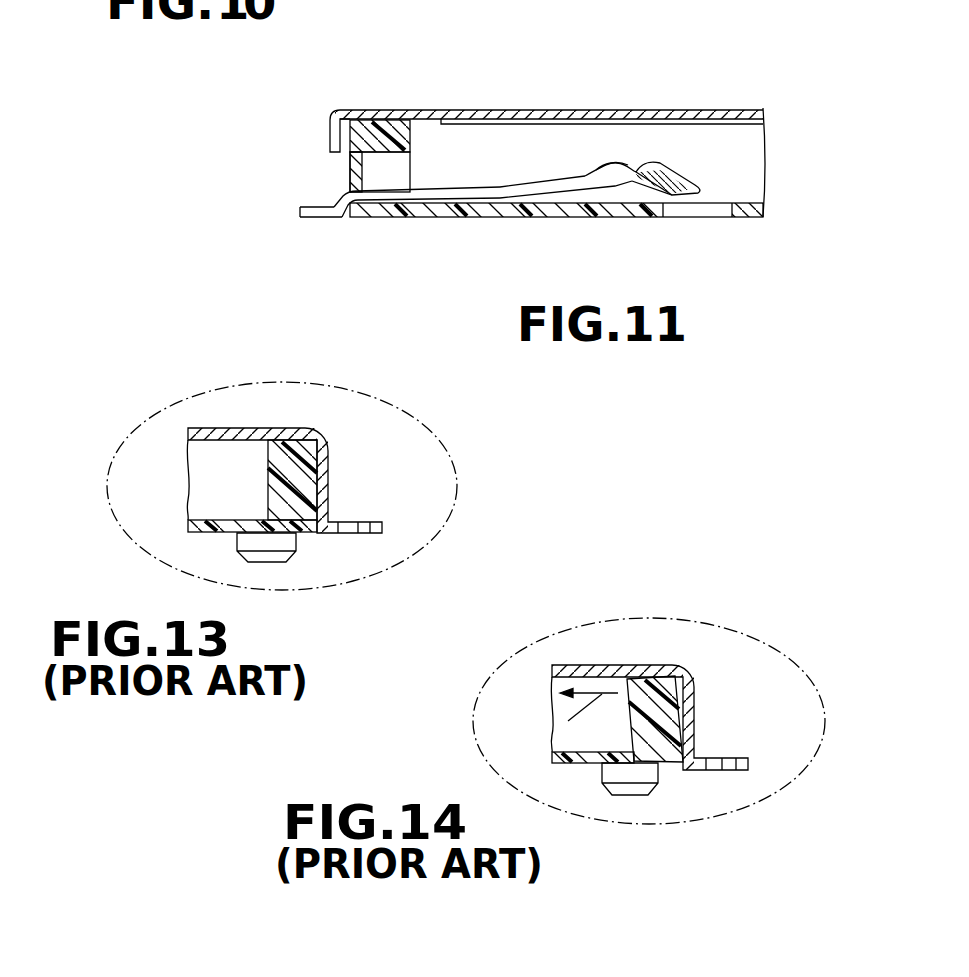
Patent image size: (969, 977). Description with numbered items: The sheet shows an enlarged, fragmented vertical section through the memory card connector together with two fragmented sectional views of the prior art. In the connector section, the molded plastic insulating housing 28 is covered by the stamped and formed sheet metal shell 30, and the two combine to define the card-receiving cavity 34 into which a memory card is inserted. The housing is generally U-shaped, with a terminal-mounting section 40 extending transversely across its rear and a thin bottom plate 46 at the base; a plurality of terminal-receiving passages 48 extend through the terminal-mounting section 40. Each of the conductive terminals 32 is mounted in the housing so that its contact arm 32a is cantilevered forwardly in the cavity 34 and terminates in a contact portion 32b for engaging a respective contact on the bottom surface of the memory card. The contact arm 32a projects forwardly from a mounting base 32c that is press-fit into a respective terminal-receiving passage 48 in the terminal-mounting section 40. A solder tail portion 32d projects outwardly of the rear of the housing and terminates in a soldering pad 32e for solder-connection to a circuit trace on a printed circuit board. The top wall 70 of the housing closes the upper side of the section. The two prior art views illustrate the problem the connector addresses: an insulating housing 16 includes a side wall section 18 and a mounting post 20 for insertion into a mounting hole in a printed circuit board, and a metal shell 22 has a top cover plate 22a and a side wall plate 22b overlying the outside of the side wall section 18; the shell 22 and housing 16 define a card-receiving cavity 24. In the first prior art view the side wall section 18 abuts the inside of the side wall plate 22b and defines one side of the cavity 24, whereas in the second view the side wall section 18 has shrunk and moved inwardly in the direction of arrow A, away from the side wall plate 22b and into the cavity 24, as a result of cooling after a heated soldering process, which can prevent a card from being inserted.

In FIG. 11, the sheet metal shell 30 is at (503, 98).
In FIG. 11, the top wall 70 is at (523, 110).
In FIG. 11, the cavity 34 is at (727, 168).
In FIG. 11, the terminal-mounting section 40 is at (373, 137).
In FIG. 11, the terminal-receiving passages 48 is at (377, 182).
In FIG. 11, the insulating housing 28 is at (493, 230).
In FIG. 11, the bottom plate 46 is at (622, 208).
In FIG. 11, the conductive terminals 32 is at (479, 159).
In FIG. 11, the contact arm 32a is at (565, 189).
In FIG. 11, the contact portion 32b is at (655, 161).
In FIG. 11, the mounting base 32c is at (387, 199).
In FIG. 11, the solder tail portion 32d is at (339, 210).
In FIG. 11, the soldering pad 32e is at (317, 218).
In FIG. 13, the metal shell 22 is at (289, 435).
In FIG. 14, the metal shell 22 is at (665, 653).
In FIG. 13, the top cover plate 22a is at (227, 430).
In FIG. 14, the top cover plate 22a is at (583, 665).
In FIG. 13, the side wall plate 22b is at (322, 478).
In FIG. 14, the side wall plate 22b is at (689, 712).
In FIG. 13, the side wall section 18 is at (293, 467).
In FIG. 14, the side wall section 18 is at (642, 695).
In FIG. 13, the insulating housing 16 is at (175, 532).
In FIG. 14, the insulating housing 16 is at (540, 759).
In FIG. 13, the card-receiving cavity 24 is at (216, 502).
In FIG. 14, the card-receiving cavity 24 is at (578, 737).
In FIG. 13, the mounting post 20 is at (286, 542).
In FIG. 14, the mounting post 20 is at (643, 773).
In FIG. 14, the arrow A is at (570, 721).